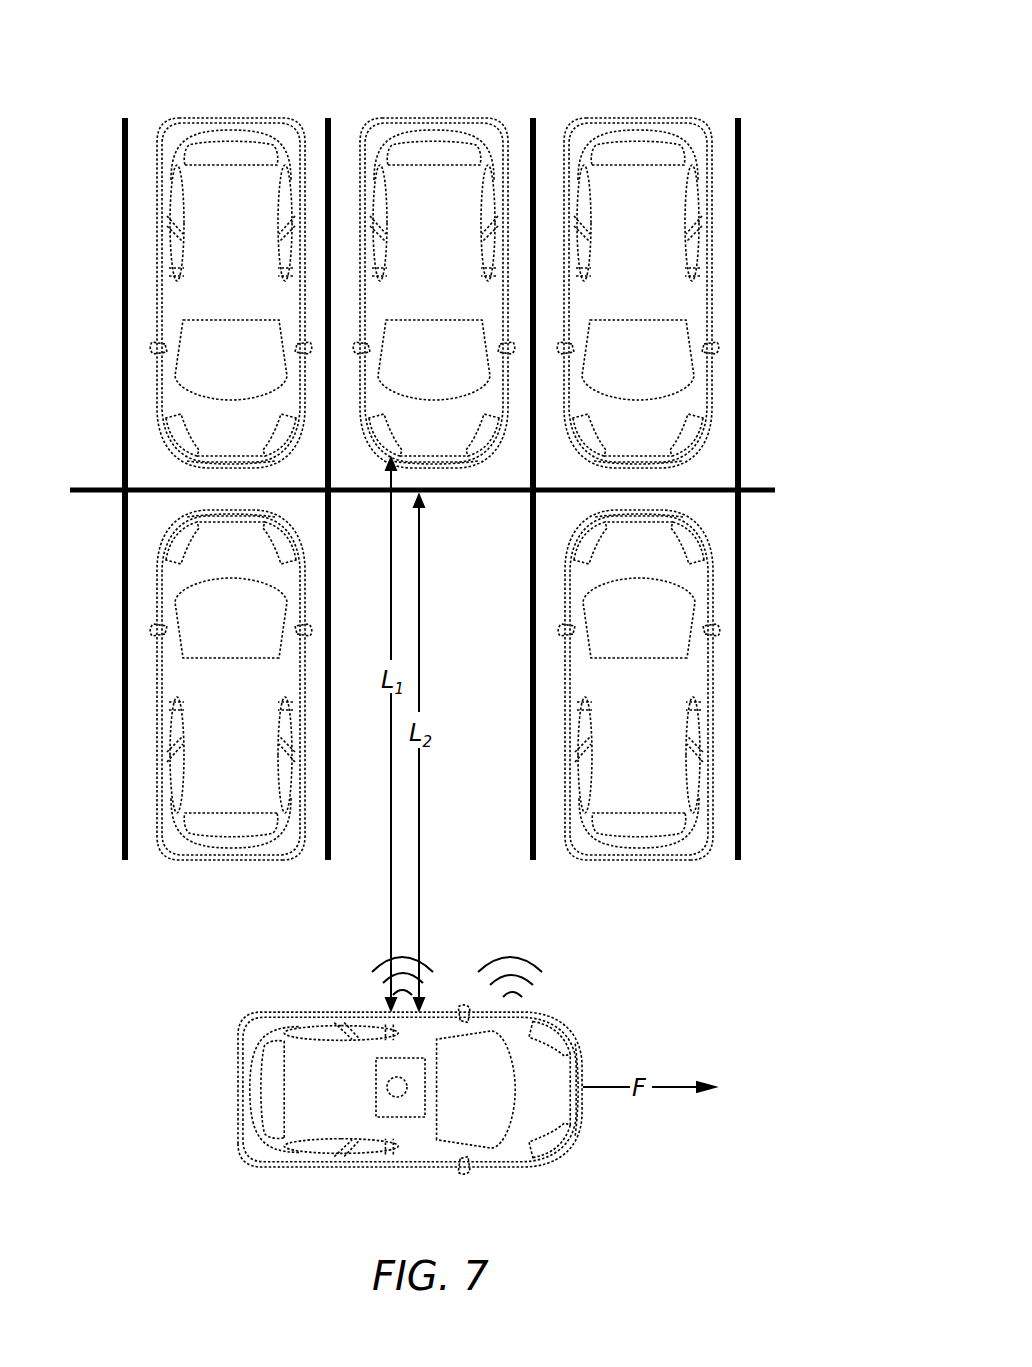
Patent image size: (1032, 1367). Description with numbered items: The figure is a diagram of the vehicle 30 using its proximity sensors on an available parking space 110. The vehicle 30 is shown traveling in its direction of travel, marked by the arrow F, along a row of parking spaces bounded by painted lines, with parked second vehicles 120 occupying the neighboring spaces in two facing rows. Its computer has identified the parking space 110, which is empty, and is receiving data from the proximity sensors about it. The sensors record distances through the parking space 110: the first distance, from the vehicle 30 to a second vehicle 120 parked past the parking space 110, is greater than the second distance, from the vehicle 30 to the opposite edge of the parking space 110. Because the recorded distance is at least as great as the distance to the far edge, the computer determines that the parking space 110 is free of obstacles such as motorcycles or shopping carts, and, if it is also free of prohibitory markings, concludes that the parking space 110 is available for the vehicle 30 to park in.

The vehicle 30 is at (240, 1082).
The parking space 110 is at (370, 785).
The second vehicle 120 is at (637, 118).